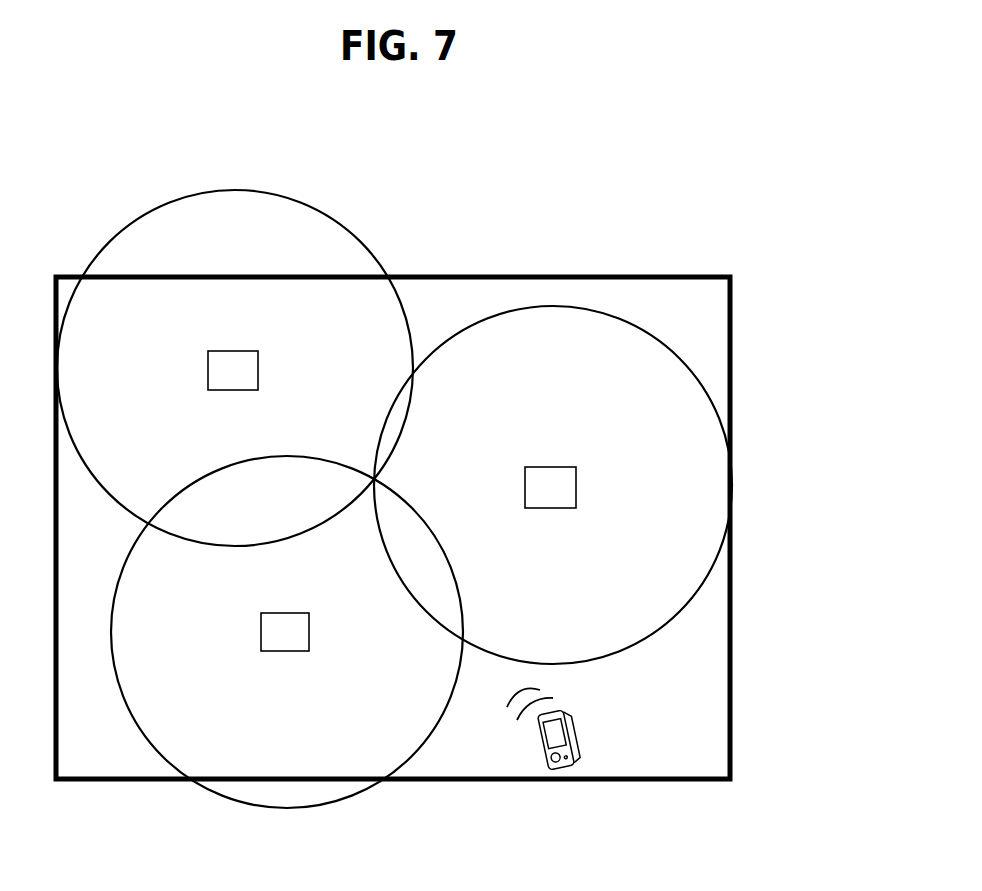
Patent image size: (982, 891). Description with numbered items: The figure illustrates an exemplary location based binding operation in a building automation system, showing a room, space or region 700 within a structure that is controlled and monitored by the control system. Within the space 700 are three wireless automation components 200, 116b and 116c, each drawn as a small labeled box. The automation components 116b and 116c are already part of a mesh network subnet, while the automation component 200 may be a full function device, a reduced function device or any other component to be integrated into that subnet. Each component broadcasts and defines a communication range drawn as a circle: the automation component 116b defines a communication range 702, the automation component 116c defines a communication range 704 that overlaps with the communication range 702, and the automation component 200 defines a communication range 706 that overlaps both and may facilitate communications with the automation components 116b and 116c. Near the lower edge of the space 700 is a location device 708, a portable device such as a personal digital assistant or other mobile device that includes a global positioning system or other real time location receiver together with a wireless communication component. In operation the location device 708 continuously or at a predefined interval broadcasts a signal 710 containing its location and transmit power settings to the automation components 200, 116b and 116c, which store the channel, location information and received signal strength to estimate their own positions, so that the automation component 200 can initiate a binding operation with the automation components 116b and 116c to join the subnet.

The room, space or region 700 is at (737, 715).
The communication range 702 is at (266, 814).
The communication range 704 is at (695, 368).
The communication range 706 is at (305, 193).
The location device 708 is at (582, 750).
The signal 710 is at (503, 702).
The automation component 200 is at (233, 370).
The automation component 116b is at (285, 632).
The automation component 116c is at (550, 487).